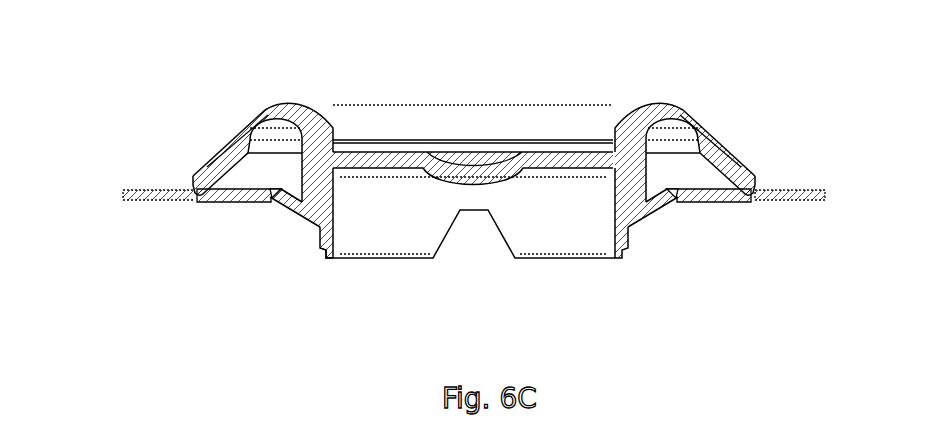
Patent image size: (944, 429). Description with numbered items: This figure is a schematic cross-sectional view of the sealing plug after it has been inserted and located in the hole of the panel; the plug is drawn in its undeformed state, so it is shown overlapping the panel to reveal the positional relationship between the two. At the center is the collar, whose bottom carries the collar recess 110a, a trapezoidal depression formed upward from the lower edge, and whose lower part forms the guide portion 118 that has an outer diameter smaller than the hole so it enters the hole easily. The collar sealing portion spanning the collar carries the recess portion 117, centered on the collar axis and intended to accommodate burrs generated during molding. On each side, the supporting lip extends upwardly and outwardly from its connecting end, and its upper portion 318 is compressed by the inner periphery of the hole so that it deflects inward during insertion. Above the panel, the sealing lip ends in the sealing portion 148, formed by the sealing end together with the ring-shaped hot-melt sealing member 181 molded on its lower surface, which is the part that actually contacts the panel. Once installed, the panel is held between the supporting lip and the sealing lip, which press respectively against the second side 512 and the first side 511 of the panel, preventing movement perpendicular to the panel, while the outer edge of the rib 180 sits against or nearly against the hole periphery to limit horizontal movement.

The collar recess 110a is at (474, 230).
The recess portion 117 is at (569, 135).
The guide portion 118 is at (330, 259).
The sealing portion 148 is at (200, 176).
The rib 180 is at (641, 188).
The sealing member 181 is at (225, 163).
The upper portion of the supporting lip 318 is at (283, 199).
The first side of the panel 511 is at (143, 189).
The second side of the panel 512 is at (152, 199).